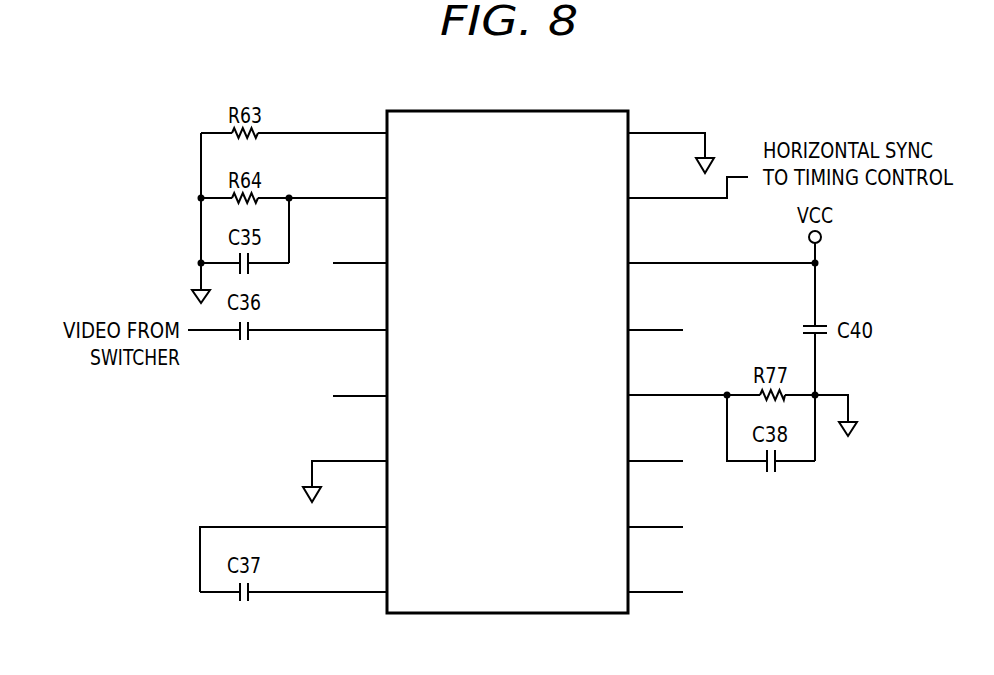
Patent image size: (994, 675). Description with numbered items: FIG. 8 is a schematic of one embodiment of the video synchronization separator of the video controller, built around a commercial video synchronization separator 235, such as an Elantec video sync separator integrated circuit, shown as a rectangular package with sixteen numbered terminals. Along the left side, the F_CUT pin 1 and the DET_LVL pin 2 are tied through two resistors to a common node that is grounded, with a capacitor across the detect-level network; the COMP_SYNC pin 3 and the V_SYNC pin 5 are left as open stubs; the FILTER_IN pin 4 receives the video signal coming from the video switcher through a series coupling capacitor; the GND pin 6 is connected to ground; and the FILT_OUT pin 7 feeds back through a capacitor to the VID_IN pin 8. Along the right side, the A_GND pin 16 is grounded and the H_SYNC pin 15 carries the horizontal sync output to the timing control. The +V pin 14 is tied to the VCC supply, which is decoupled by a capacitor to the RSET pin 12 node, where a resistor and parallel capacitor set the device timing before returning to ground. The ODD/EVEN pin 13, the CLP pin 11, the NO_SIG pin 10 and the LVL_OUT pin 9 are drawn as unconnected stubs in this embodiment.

The commercial video synchronization separator 235 is at (508, 111).
The F_CUT pin 1 is at (322, 121).
The DET_LVL pin 2 is at (322, 186).
The COMP_SYNC pin 3 is at (360, 251).
The FILTER_IN pin 4 is at (317, 318).
The V_SYNC pin 5 is at (360, 384).
The GND pin 6 is at (345, 469).
The FILT_OUT pin 7 is at (293, 547).
The VID_IN pin 8 is at (317, 580).
The LVL_OUT pin 9 is at (655, 580).
The NO_SIG pin 10 is at (655, 515).
The CLP pin 11 is at (655, 449).
The RSET pin 12 is at (694, 384).
The ODD/EVEN pin 13 is at (655, 318).
The +V pin 14 is at (721, 251).
The H_SYNC pin 15 is at (688, 186).
The A_GND pin 16 is at (671, 141).